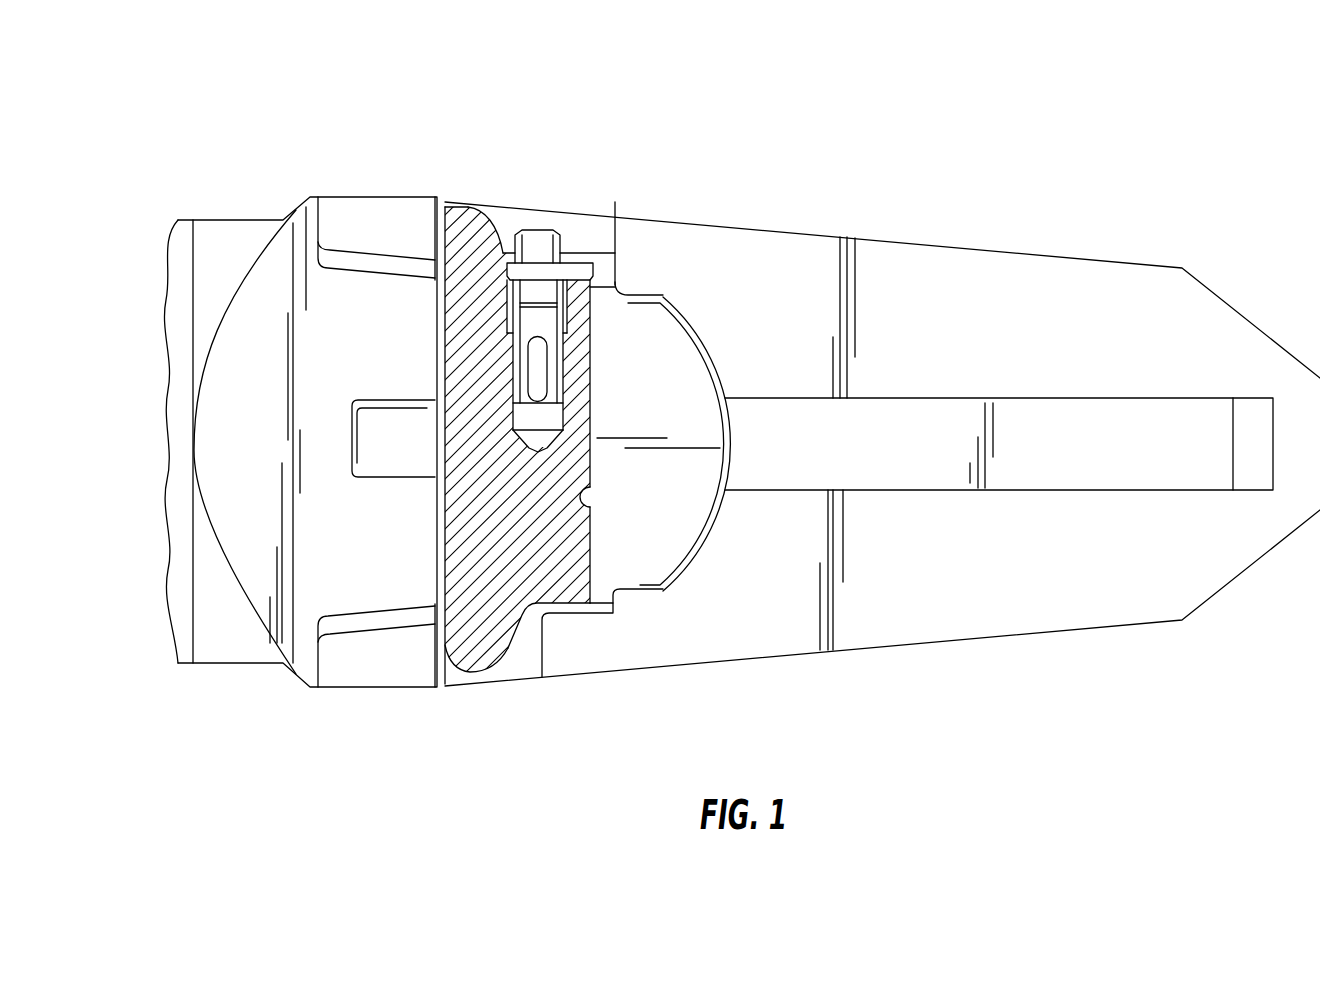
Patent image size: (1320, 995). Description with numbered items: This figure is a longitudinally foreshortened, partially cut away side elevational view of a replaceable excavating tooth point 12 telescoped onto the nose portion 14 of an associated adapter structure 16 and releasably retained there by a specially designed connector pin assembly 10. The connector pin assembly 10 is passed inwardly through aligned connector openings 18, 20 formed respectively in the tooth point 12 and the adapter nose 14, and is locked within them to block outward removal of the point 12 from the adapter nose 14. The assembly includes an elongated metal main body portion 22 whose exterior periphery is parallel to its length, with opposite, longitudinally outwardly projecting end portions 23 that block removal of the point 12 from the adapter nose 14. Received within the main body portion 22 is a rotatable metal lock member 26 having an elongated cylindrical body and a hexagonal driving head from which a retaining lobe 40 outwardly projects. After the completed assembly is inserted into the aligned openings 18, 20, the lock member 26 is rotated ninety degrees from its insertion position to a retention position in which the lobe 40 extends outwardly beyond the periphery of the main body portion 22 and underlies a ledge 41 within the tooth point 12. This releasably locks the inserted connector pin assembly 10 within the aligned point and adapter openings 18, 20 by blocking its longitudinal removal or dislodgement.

The connector pin assembly 10 is at (596, 412).
The excavating tooth point 12 is at (1003, 248).
The nose portion 14 is at (680, 462).
The adapter structure 16 is at (205, 216).
The connector opening 18 is at (603, 226).
The connector opening 20 is at (586, 506).
The main body portion 22 is at (483, 593).
The end portions 23 is at (473, 228).
The lock member 26 is at (557, 381).
The retaining lobe 40 is at (570, 270).
The ledge 41 is at (478, 290).